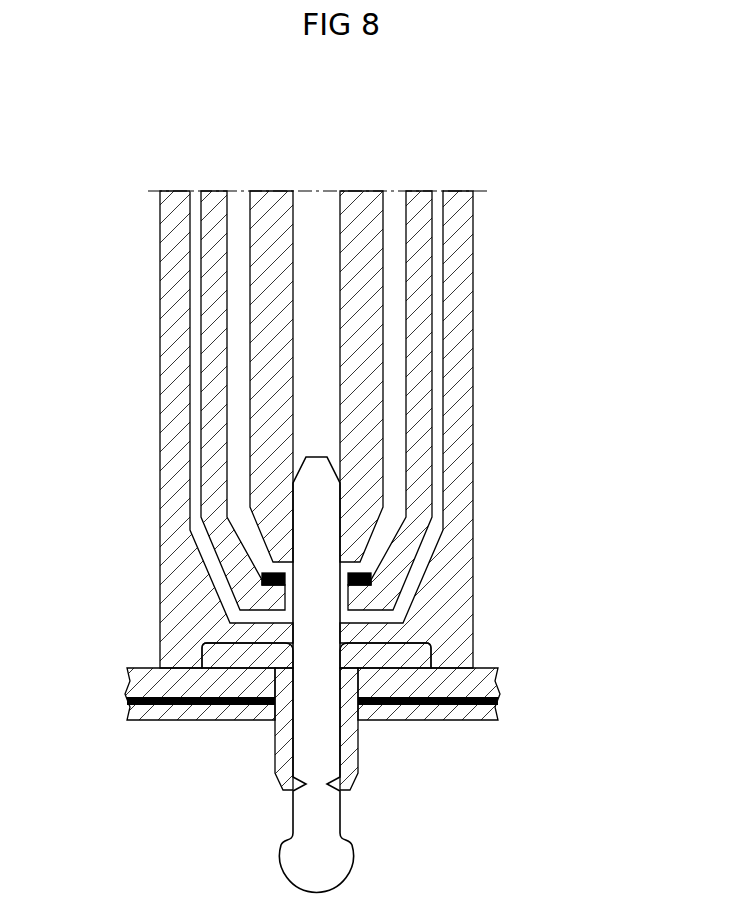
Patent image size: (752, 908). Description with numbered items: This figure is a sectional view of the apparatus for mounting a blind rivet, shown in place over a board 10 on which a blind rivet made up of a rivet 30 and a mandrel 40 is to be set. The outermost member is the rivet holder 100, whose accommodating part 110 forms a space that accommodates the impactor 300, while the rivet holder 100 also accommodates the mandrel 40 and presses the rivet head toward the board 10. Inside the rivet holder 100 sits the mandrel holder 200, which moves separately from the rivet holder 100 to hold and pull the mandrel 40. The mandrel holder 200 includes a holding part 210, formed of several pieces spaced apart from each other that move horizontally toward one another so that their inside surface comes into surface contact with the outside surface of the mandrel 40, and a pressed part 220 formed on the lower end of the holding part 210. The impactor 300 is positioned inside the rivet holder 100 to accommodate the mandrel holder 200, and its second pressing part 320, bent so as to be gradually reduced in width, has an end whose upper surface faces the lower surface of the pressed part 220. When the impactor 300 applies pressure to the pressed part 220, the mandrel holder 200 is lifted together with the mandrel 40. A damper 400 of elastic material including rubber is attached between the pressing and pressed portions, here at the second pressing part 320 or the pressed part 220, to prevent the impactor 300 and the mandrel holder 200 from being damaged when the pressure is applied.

The board 10 is at (498, 690).
The rivet 30 is at (283, 750).
The mandrel 40 is at (317, 752).
The rivet holder 100 is at (400, 373).
The accommodating part 110 is at (464, 306).
The mandrel holder 200 is at (224, 320).
The holding part 210 is at (270, 348).
The pressed part 220 is at (262, 581).
The impactor 300 is at (214, 217).
The second pressing part 320 is at (240, 636).
The damper 400 is at (372, 578).